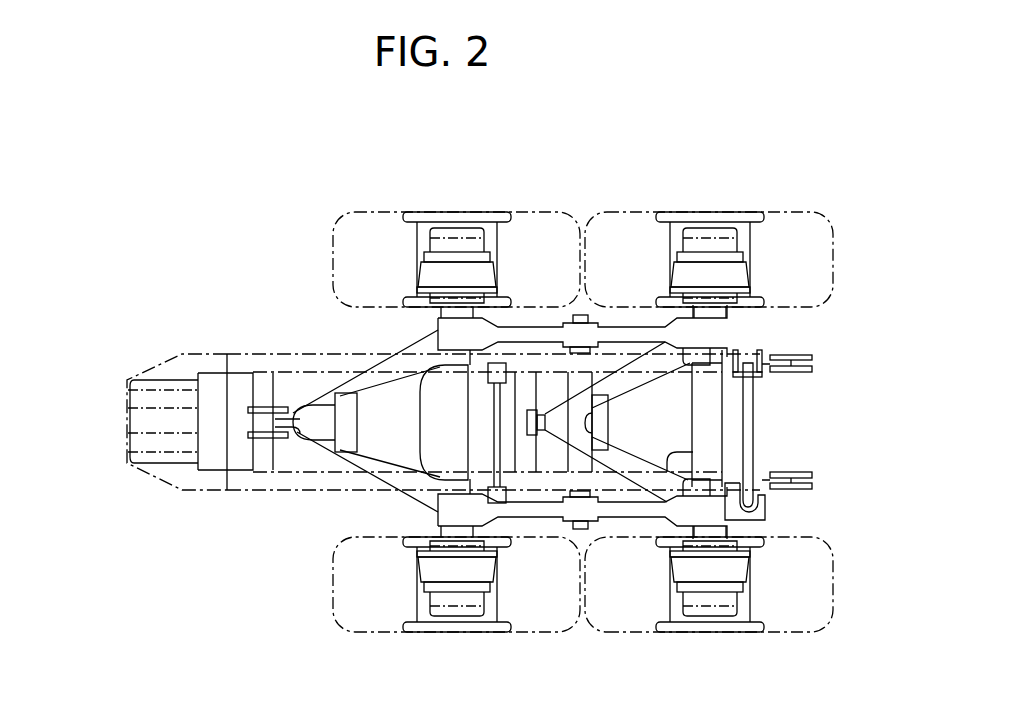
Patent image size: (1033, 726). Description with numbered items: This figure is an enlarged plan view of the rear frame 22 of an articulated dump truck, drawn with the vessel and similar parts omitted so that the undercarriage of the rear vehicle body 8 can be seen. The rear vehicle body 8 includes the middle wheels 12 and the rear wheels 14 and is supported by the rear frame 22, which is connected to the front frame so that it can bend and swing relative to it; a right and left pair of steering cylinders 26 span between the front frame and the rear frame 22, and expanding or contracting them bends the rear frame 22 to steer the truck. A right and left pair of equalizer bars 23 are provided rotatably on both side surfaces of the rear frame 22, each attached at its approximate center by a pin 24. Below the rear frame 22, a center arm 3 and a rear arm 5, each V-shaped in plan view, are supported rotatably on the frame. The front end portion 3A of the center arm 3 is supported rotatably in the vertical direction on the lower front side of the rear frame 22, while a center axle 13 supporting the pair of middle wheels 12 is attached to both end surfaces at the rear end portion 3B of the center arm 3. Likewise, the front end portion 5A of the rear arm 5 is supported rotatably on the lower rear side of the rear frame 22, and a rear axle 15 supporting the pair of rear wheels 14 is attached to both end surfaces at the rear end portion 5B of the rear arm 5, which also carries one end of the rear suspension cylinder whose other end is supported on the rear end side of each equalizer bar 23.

The rear vehicle body 8 is at (679, 131).
The middle wheels 12 is at (373, 238).
The rear wheels 14 is at (804, 240).
The equalizer bars 23 is at (523, 332).
The pins 24 is at (584, 320).
The rear frame 22 is at (258, 360).
The steering cylinders 26 is at (147, 443).
The center arm 3 is at (358, 458).
The front end portion 3A is at (292, 432).
The rear end portion 3B is at (440, 496).
The center axle 13 is at (455, 412).
The rear arm 5 is at (628, 387).
The front end portion 5A is at (542, 424).
The rear end portion 5B is at (668, 471).
The rear axle 15 is at (710, 400).